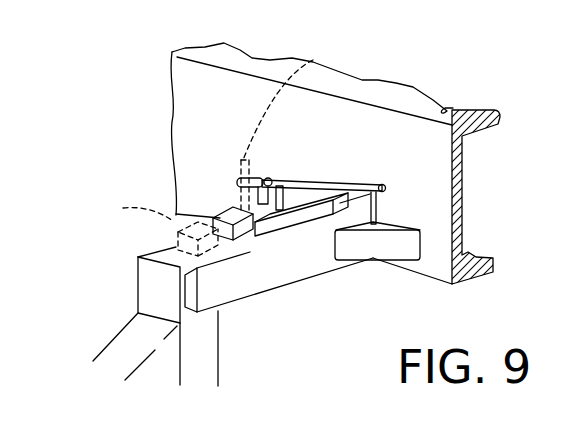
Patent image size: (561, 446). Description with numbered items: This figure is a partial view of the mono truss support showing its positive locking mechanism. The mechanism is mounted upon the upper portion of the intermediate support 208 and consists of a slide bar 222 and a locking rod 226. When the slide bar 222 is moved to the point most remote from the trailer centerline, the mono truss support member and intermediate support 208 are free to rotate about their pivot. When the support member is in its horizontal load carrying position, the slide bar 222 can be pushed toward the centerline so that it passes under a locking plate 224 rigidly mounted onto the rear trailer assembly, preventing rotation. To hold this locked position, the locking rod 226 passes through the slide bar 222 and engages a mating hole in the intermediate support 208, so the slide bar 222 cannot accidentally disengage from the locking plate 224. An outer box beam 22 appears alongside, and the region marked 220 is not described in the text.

The outer box beam 22 is at (455, 109).
The intermediate support 208 is at (207, 344).
The wall panel 220 is at (198, 180).
The slide bar 222 is at (197, 218).
The locking plate 224 is at (287, 180).
The locking rod 226 is at (272, 176).